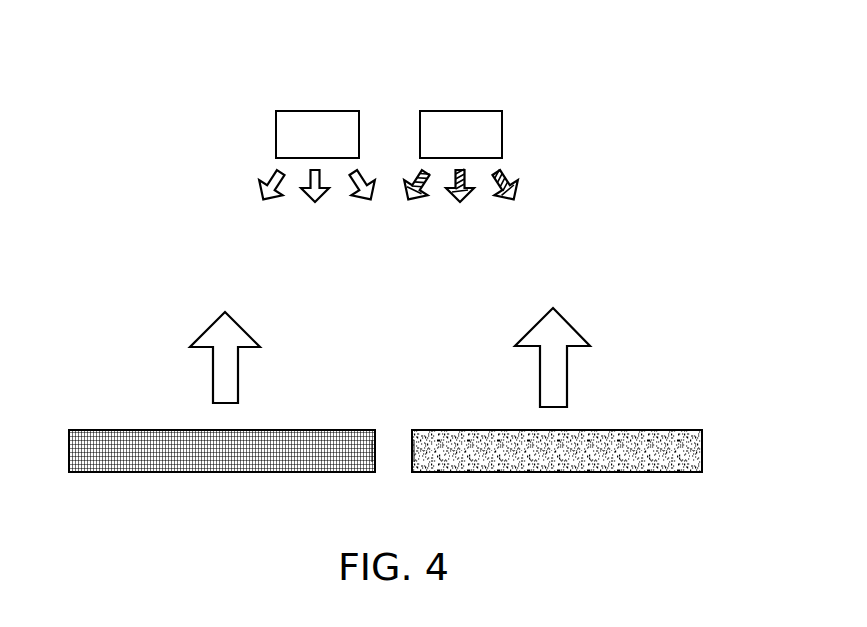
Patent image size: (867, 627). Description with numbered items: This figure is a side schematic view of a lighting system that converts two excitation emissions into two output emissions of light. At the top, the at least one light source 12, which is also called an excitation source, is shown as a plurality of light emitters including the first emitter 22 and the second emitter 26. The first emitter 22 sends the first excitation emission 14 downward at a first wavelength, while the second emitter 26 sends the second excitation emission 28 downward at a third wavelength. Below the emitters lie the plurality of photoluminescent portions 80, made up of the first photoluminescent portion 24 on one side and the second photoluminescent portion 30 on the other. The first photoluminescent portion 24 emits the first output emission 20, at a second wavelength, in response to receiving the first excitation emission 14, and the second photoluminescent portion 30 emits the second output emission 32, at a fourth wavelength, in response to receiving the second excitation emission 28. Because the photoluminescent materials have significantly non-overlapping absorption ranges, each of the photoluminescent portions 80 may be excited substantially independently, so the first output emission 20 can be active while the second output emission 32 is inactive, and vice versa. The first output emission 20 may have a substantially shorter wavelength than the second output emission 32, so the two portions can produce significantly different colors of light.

The light source 12 is at (522, 55).
The first excitation emission 14 is at (252, 212).
The first output emission 20 is at (215, 370).
The first emitter 22 is at (317, 134).
The first photoluminescent portion 24 is at (117, 467).
The second emitter 26 is at (461, 134).
The second excitation emission 28 is at (520, 215).
The second photoluminescent portion 30 is at (662, 465).
The second output emission 32 is at (560, 367).
The photoluminescent portions 80 is at (427, 455).